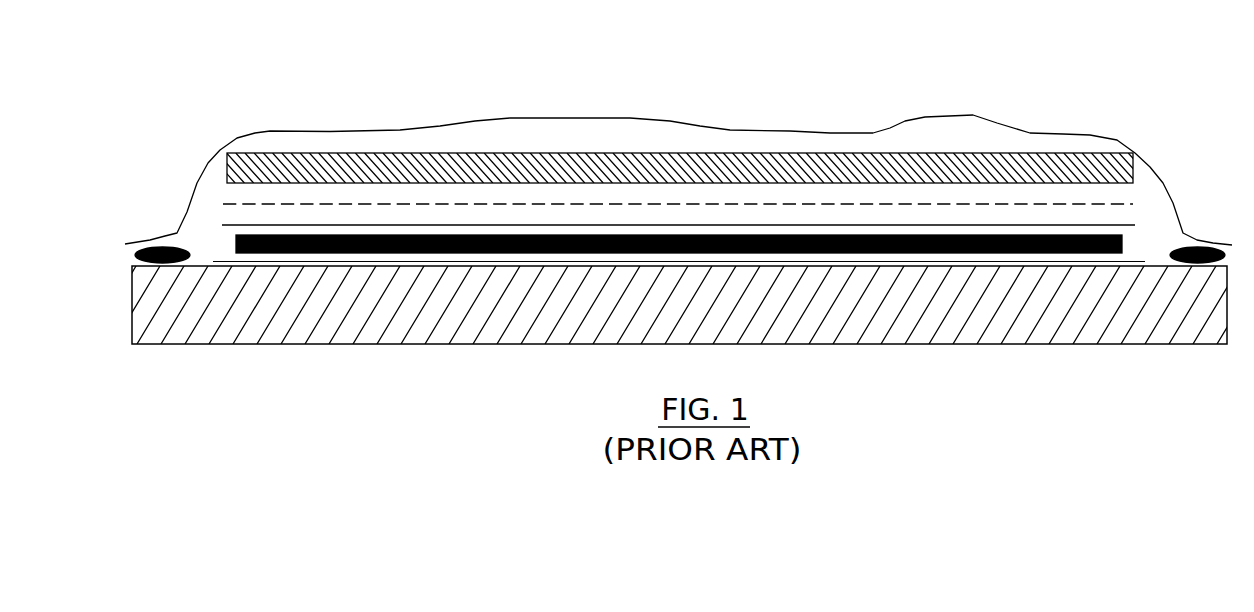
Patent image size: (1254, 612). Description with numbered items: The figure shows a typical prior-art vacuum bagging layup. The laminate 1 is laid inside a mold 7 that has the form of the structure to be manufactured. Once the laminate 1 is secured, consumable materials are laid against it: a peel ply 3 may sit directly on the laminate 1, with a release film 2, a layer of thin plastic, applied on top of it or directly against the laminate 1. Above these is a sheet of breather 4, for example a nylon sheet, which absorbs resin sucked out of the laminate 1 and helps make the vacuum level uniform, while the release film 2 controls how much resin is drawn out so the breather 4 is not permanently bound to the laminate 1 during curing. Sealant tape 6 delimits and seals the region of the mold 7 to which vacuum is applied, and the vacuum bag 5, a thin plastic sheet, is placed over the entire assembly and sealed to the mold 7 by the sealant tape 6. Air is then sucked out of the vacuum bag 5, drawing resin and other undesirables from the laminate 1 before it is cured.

The laminate 1 is at (607, 233).
The release film 2 is at (505, 205).
The peel ply 3 is at (360, 225).
The breather 4 is at (742, 155).
The vacuum bag 5 is at (832, 133).
The sealant tape 6 is at (150, 247).
The mold 7 is at (208, 310).